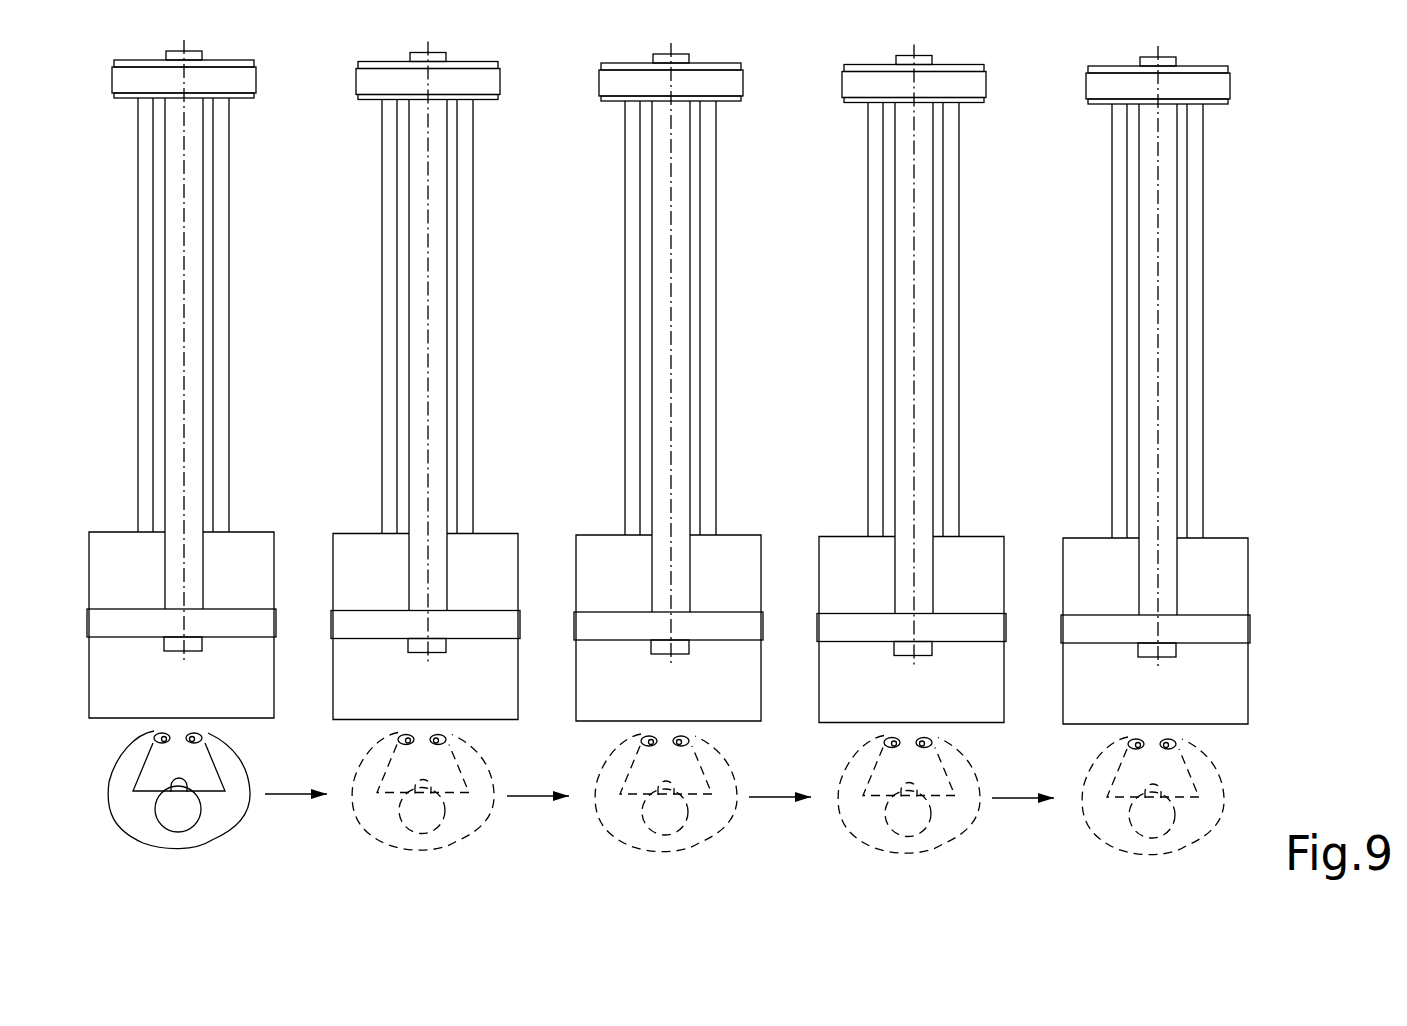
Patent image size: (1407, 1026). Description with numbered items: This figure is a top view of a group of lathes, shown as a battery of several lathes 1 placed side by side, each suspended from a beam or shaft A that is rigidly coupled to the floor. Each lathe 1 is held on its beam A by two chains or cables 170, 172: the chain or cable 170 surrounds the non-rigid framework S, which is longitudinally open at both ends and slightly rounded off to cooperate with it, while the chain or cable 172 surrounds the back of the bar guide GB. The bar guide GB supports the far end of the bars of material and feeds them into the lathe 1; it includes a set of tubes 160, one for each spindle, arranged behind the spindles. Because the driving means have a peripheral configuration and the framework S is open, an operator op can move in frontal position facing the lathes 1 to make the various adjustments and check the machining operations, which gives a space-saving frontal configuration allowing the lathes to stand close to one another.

The lathe 1 is at (667, 402).
The chain or cable 172 is at (356, 82).
The bar guide GB is at (362, 117).
The tubes 160 is at (392, 262).
The beam or shaft A is at (418, 325).
The non-rigid framework S is at (353, 580).
The chain or cable 170 is at (242, 622).
The operator op is at (363, 806).